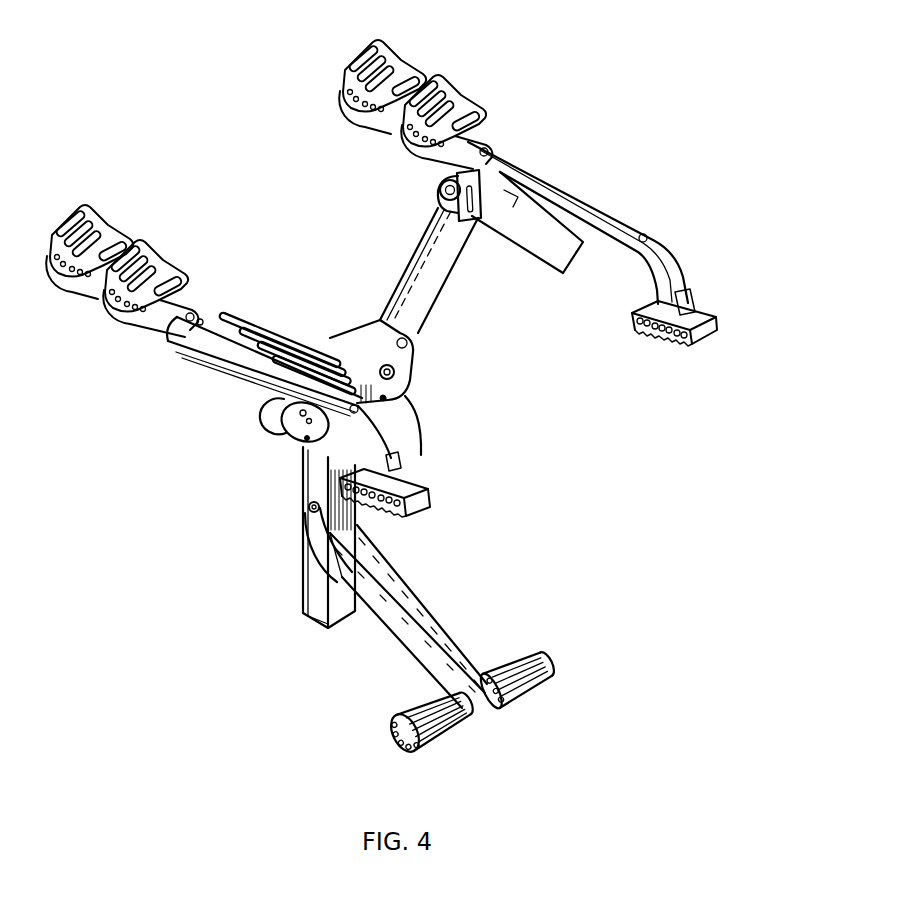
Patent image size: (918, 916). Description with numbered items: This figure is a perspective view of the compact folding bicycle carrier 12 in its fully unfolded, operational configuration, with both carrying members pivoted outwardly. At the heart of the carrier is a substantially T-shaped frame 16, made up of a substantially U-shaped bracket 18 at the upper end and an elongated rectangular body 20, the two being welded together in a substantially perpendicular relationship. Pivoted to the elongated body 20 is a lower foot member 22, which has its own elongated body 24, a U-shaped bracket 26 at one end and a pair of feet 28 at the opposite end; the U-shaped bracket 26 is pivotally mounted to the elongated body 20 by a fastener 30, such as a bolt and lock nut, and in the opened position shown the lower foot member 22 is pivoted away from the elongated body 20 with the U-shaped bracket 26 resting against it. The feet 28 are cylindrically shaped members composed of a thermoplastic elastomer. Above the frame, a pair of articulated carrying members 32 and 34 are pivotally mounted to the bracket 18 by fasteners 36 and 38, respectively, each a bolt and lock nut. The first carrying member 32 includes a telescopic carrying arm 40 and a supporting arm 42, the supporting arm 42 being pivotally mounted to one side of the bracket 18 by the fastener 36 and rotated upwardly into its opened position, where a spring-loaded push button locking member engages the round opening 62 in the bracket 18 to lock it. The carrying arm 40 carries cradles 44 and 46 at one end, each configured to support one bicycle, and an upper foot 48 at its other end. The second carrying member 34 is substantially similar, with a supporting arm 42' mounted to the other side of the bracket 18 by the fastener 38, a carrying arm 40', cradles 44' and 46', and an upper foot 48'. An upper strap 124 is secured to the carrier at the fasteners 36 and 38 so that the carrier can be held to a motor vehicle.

The compact folding bicycle carrier 12 is at (675, 228).
The frame 16 is at (293, 472).
The bracket 18 is at (405, 383).
The elongated body 20 is at (303, 600).
The lower foot member 22 is at (470, 637).
The elongated body 24 is at (412, 610).
The U-shaped bracket 26 is at (313, 540).
The feet 28 is at (520, 698).
The fastener 30 is at (307, 507).
The articulated carrying member 32 is at (253, 297).
The articulated carrying member 34 is at (583, 183).
The fastener 36 is at (297, 443).
The fastener 38 is at (407, 377).
The telescopic carrying arm 40 is at (203, 299).
The telescopic carrying arm 40' is at (581, 226).
The supporting arm 42 is at (252, 384).
The supporting arm 42' is at (438, 252).
The cradle 44 is at (110, 237).
The cradle 44' is at (407, 73).
The cradle 46 is at (170, 272).
The cradle 46' is at (469, 106).
The upper foot 48 is at (425, 473).
The upper foot 48' is at (708, 305).
The round opening 62 is at (262, 420).
The upper strap 124 is at (563, 253).